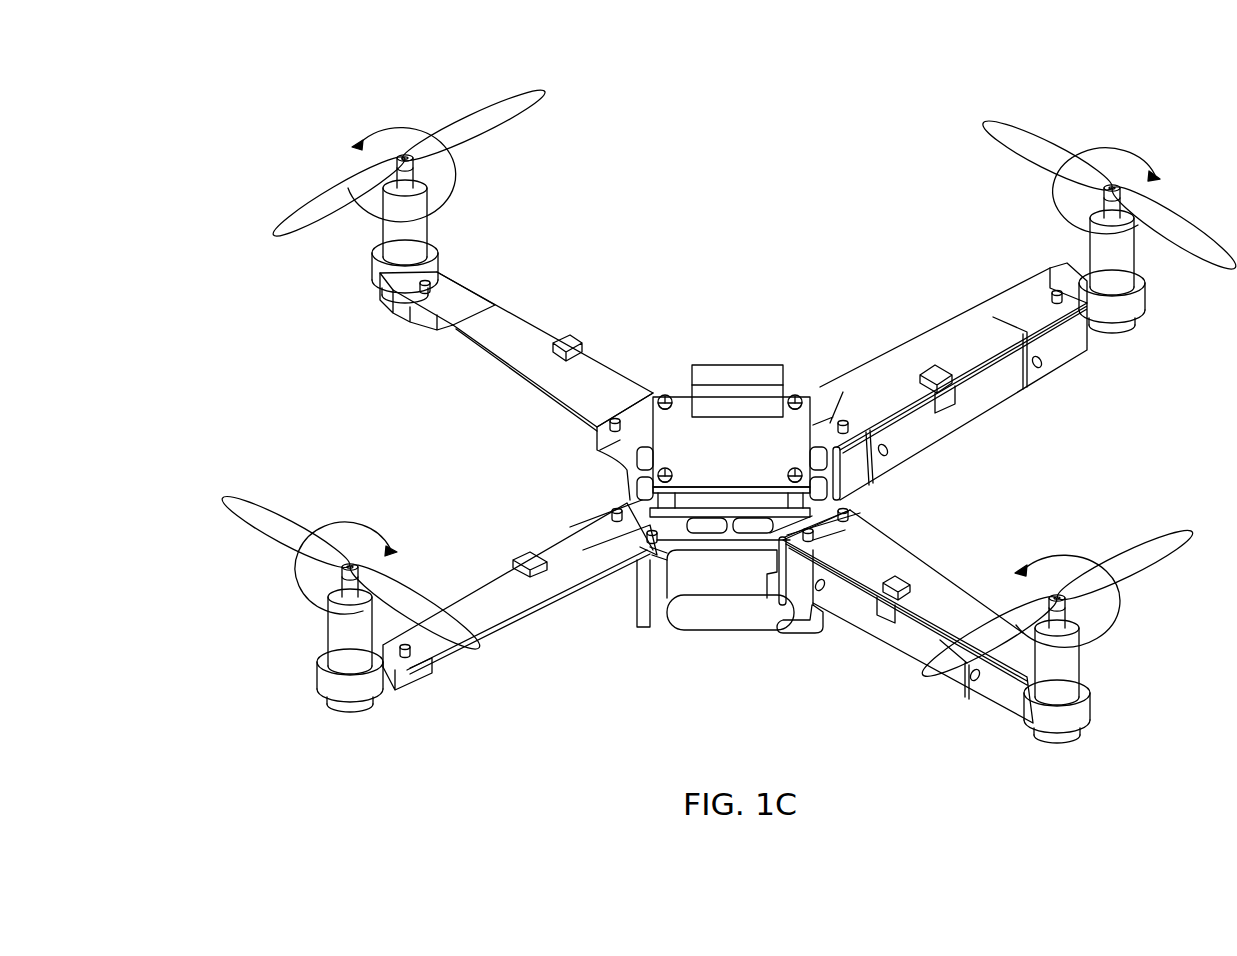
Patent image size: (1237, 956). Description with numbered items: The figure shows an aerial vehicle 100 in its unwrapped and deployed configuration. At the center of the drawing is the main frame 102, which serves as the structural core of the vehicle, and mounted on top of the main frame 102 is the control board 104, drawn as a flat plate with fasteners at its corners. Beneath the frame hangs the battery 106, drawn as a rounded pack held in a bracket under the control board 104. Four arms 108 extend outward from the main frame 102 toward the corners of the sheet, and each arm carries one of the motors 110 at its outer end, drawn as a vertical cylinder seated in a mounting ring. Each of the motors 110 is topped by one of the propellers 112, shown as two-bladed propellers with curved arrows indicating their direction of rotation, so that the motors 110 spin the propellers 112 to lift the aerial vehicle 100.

The aerial vehicle 100 is at (1190, 125).
The main frame 102 is at (823, 467).
The control board 104 is at (730, 435).
The battery 106 is at (713, 615).
The arms 108 is at (535, 328).
The motors 110 is at (423, 213).
The propellers 112 is at (260, 507).